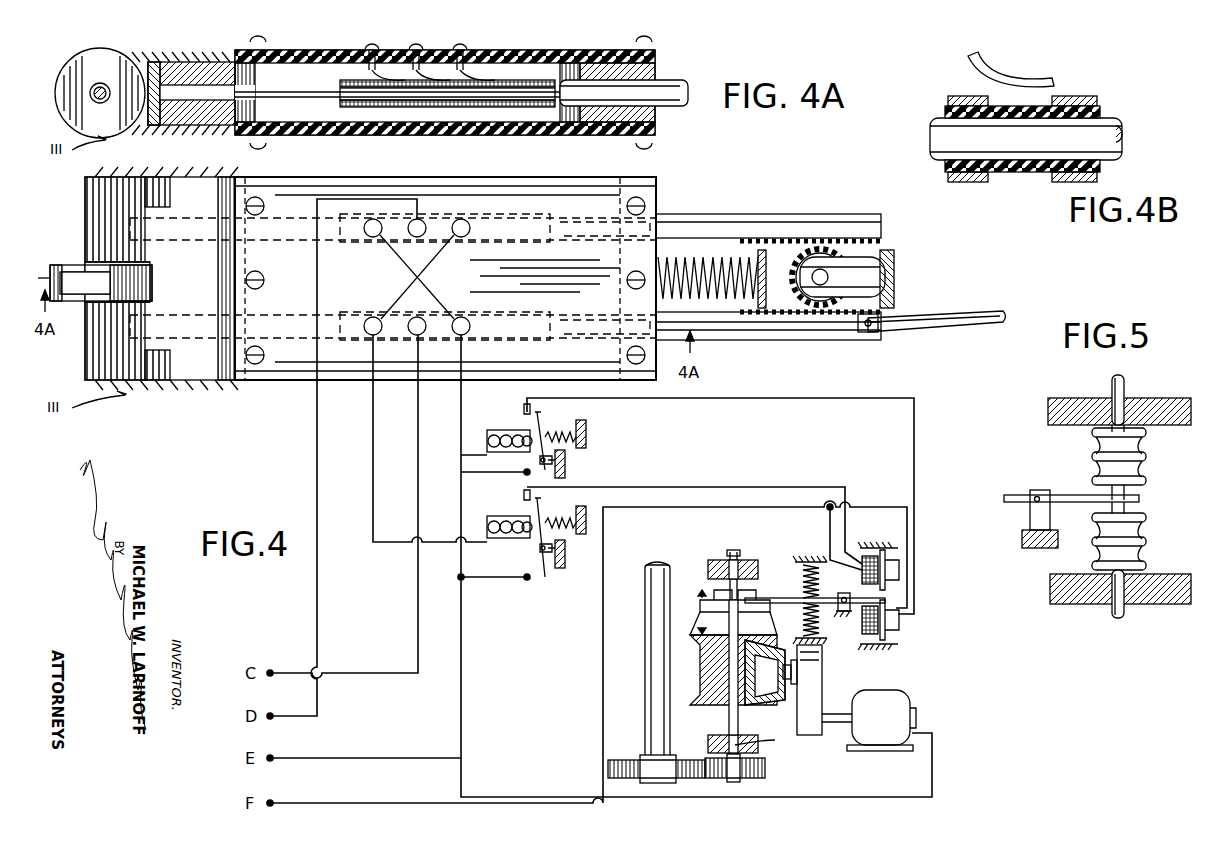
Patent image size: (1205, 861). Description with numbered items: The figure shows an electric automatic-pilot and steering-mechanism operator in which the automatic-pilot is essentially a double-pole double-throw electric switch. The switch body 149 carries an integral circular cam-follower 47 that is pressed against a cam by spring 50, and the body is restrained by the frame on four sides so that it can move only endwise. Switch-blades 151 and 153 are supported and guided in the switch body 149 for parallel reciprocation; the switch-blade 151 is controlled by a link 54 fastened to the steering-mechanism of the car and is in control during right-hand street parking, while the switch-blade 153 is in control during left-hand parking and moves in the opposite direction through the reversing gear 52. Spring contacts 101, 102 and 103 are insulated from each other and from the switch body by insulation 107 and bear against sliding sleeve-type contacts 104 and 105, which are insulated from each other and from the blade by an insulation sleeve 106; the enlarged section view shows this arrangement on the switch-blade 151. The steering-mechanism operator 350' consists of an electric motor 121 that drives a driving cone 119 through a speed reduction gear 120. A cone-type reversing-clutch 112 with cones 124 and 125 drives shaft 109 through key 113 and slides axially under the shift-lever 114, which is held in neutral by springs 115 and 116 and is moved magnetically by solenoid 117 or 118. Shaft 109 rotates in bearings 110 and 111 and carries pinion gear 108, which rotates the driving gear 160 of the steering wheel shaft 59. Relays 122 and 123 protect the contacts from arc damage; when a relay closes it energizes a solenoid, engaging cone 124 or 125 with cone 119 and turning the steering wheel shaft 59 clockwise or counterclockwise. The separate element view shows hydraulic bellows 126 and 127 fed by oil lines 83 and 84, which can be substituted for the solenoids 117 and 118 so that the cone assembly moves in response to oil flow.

In FIG. 4A, the circular cam-follower 47 is at (126, 68).
In FIG. 4, the circular cam-follower 47 is at (82, 285).
In FIG. 4, the spring 50 is at (728, 258).
In FIG. 4, the reversing gear 52 is at (848, 250).
In FIG. 4, the link 54 is at (964, 318).
In FIG. 4, the steering wheel shaft 59 is at (645, 722).
In FIG. 5, the oil line 83 is at (1122, 392).
In FIG. 5, the oil line 84 is at (1112, 610).
In FIG. 4A, the spring contact 101 is at (372, 44).
In FIG. 4, the spring contact 101 is at (370, 318).
In FIG. 4A, the spring contact 102 is at (422, 56).
In FIG. 4B, the spring contact 102 is at (1000, 86).
In FIG. 4, the spring contact 102 is at (420, 318).
In FIG. 4A, the spring contact 103 is at (500, 52).
In FIG. 4, the spring contact 103 is at (465, 318).
In FIG. 4A, the sleeve-type contact 104 is at (352, 90).
In FIG. 4B, the sleeve-type contact 104 is at (962, 96).
In FIG. 4A, the sleeve-type contact 105 is at (475, 112).
In FIG. 4B, the sleeve-type contact 105 is at (1085, 96).
In FIG. 4A, the insulation sleeve 106 is at (444, 108).
In FIG. 4B, the insulation sleeve 106 is at (1020, 184).
In FIG. 4A, the insulation 107 is at (595, 62).
In FIG. 4, the insulation 107 is at (600, 184).
In FIG. 4, the pinion gear 108 is at (765, 772).
In FIG. 4, the shaft 109 is at (775, 740).
In FIG. 4, the bearing 110 is at (760, 750).
In FIG. 4, the bearing 111 is at (710, 566).
In FIG. 4, the cone-type reversing-clutch 112 is at (715, 665).
In FIG. 4, the key 113 is at (728, 718).
In FIG. 5, the shift-lever 114 is at (1137, 499).
In FIG. 4, the shift-lever 114 is at (778, 596).
In FIG. 4, the spring 115 is at (820, 588).
In FIG. 4, the spring 116 is at (820, 628).
In FIG. 4, the solenoid 117 is at (900, 574).
In FIG. 4, the solenoid 118 is at (900, 630).
In FIG. 4, the driving cone 119 is at (790, 690).
In FIG. 4, the speed reduction gear 120 is at (812, 680).
In FIG. 4, the electric motor 121 is at (878, 692).
In FIG. 4, the relay 122 is at (508, 432).
In FIG. 4, the relay 123 is at (508, 516).
In FIG. 4, the cone 124 is at (725, 705).
In FIG. 4, the cone 125 is at (700, 625).
In FIG. 5, the hydraulic bellows 126 is at (1095, 444).
In FIG. 5, the hydraulic bellows 127 is at (1135, 530).
In FIG. 4A, the switch body 149 is at (198, 60).
In FIG. 4, the switch body 149 is at (215, 380).
In FIG. 4A, the switch-blade 151 is at (680, 78).
In FIG. 4B, the switch-blade 151 is at (1102, 134).
In FIG. 4, the switch-blade 151 is at (765, 336).
In FIG. 4, the switch-blade 153 is at (862, 222).
In FIG. 4, the driving gear 160 is at (630, 760).
In FIG. 4, the steering-mechanism operator 350' is at (956, 691).